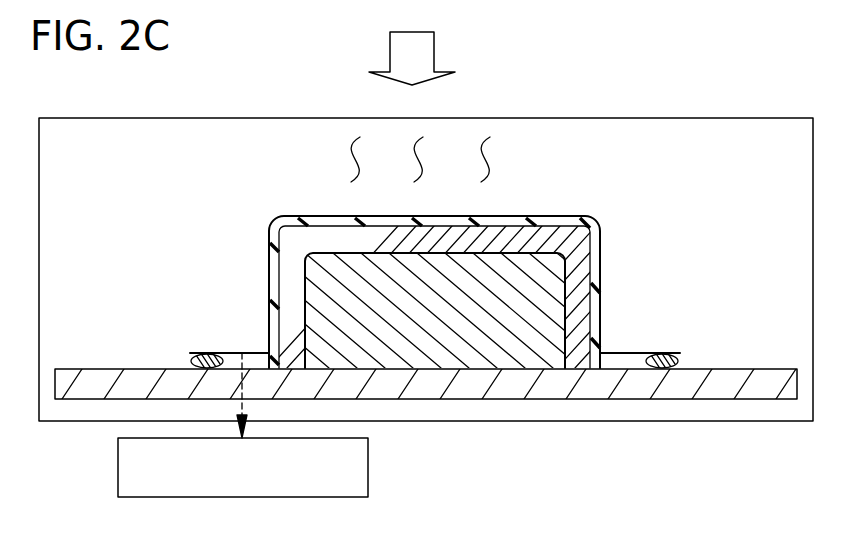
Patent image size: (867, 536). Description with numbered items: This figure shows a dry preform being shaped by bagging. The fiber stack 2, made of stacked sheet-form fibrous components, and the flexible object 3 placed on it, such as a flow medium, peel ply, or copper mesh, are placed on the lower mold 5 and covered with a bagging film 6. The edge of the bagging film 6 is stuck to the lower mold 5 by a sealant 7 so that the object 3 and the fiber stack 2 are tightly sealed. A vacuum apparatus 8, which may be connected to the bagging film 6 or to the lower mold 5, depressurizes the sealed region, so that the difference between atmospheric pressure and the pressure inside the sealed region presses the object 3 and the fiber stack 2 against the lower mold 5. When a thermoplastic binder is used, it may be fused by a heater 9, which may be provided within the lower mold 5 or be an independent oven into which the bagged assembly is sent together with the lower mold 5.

The fiber stack 2 is at (295, 273).
The object 3 is at (318, 226).
The lower mold 5 is at (443, 347).
The bagging film 6 is at (600, 253).
The sealant 7 is at (665, 355).
The vacuum apparatus 8 is at (118, 466).
The heater 9 is at (745, 421).